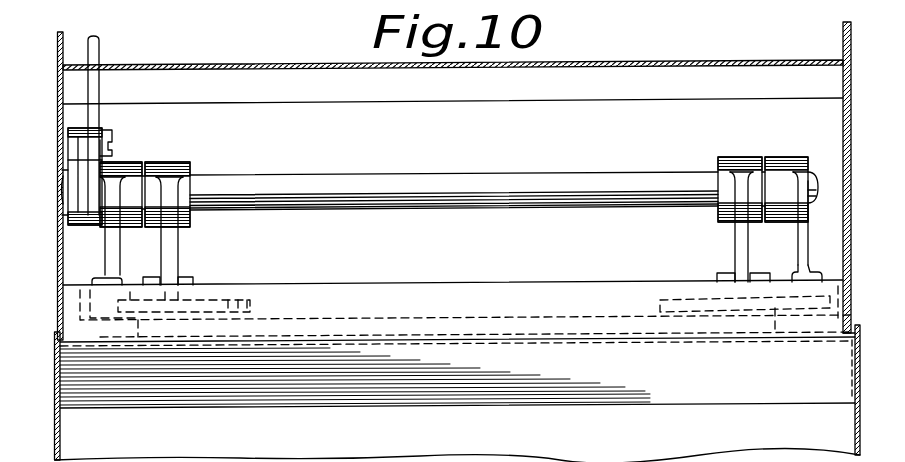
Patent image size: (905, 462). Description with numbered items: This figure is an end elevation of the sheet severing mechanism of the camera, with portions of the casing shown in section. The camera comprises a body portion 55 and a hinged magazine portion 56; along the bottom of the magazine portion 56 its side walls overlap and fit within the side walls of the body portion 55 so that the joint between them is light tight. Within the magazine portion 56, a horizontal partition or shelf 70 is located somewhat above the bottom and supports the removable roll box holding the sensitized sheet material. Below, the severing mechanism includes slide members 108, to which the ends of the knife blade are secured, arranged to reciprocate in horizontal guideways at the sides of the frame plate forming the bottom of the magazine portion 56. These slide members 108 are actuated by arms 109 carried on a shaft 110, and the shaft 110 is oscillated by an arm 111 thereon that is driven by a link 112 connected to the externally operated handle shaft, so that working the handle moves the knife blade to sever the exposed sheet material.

The body portion 55 is at (62, 446).
The magazine portion 56 is at (63, 43).
The horizontal partition or shelf 70 is at (207, 65).
The slide members 108 is at (193, 283).
The arms 109 is at (178, 249).
The shaft 110 is at (523, 181).
The arm 111 is at (75, 172).
The link 112 is at (97, 126).